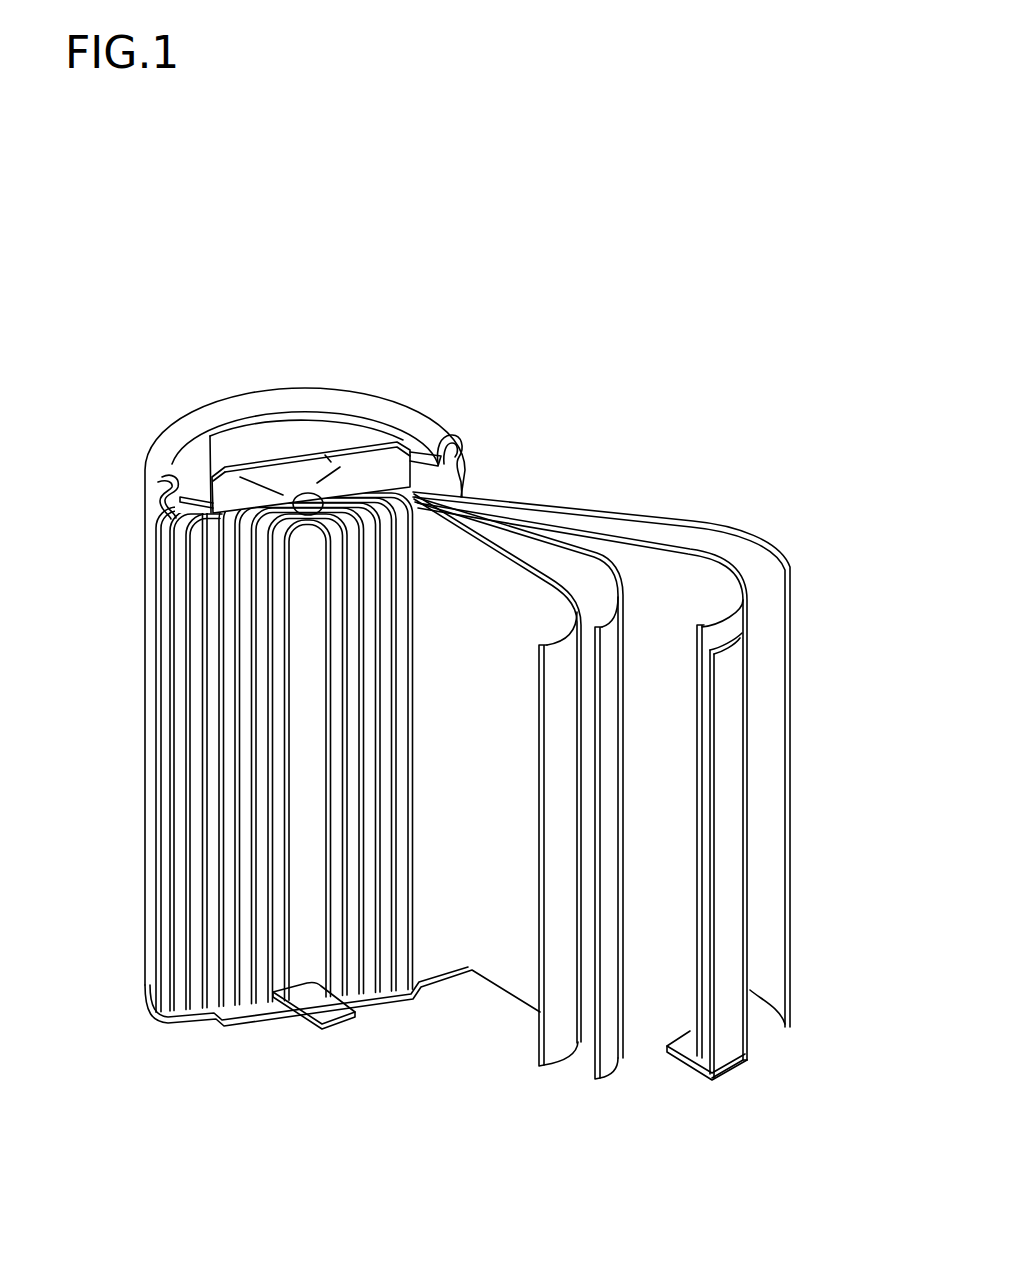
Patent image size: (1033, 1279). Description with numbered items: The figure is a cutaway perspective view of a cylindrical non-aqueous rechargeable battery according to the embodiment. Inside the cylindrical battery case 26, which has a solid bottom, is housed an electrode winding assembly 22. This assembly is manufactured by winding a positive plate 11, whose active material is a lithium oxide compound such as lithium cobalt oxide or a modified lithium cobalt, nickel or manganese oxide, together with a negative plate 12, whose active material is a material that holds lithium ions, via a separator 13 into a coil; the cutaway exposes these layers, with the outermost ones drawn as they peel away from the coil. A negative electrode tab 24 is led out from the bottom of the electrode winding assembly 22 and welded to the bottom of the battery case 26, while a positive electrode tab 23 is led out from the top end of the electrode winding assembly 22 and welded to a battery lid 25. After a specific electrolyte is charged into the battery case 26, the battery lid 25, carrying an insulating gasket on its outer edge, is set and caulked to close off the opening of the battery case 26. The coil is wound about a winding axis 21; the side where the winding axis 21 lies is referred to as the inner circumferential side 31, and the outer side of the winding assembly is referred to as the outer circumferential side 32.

The positive plate 11 is at (508, 600).
The negative plate 12 is at (702, 572).
The separator 13 is at (590, 583).
The winding axis 21 is at (310, 820).
The electrode winding assembly 22 is at (219, 784).
The positive electrode tab 23 is at (403, 442).
The negative electrode tab 24 is at (728, 1057).
The battery lid 25 is at (290, 483).
The battery case 26 is at (147, 617).
The inner circumferential side 31 is at (278, 895).
The outer circumferential side 32 is at (172, 905).